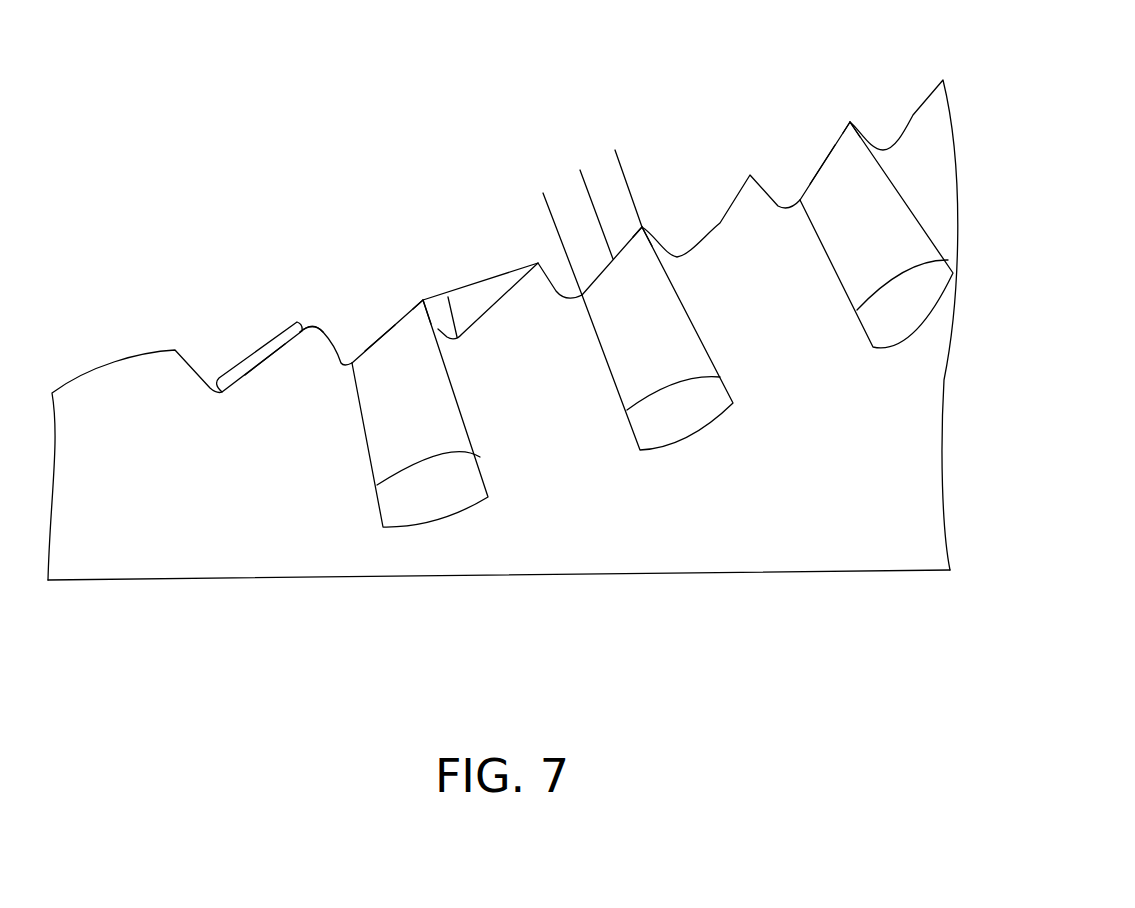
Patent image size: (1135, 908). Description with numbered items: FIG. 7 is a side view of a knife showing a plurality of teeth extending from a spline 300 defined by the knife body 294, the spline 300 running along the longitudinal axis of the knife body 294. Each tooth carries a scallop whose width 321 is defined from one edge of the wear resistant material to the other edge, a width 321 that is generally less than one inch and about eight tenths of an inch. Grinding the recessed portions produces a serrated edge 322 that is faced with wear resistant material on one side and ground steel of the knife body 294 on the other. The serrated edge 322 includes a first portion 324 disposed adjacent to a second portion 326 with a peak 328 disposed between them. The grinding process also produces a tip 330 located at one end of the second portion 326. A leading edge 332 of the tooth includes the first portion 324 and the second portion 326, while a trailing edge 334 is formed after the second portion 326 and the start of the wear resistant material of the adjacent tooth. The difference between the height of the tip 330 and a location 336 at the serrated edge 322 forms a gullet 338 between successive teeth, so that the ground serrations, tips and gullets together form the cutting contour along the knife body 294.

The spline 300 is at (813, 433).
The knife body 294 is at (550, 548).
The width of the scallop 321 is at (484, 480).
The serrated edge 322 is at (393, 321).
The first portion 324 is at (570, 252).
The second portion 326 is at (596, 203).
The peak 328 is at (389, 347).
The tip 330 is at (423, 297).
The leading edge 332 is at (257, 351).
The trailing edge 334 is at (343, 340).
The location at the serrated edge 336 is at (464, 344).
The gullet 338 is at (455, 318).